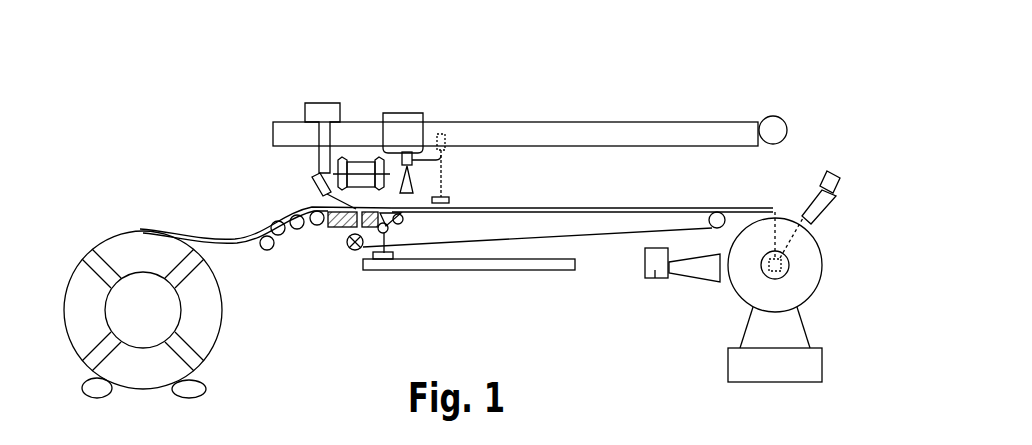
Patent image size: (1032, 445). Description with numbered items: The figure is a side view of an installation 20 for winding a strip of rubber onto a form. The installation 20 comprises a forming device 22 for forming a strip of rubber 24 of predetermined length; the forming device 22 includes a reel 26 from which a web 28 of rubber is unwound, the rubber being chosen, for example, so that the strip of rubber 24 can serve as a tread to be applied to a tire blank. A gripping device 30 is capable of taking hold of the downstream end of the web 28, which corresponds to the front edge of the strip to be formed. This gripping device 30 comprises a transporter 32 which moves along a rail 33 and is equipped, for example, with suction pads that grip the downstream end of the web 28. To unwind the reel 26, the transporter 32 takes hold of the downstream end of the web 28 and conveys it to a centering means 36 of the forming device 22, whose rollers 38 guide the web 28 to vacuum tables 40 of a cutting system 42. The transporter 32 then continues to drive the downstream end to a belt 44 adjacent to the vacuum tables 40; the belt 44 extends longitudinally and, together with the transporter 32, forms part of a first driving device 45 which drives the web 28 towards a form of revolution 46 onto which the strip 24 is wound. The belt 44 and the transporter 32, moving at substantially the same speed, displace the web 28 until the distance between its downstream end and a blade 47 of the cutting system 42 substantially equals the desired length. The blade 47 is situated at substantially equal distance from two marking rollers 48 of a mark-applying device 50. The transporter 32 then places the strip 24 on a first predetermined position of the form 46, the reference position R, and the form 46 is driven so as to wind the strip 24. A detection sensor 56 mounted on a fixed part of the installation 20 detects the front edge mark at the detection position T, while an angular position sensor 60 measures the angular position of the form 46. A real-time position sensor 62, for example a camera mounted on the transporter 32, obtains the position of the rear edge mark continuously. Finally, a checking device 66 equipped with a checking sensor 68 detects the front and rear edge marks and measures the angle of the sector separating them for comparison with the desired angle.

The installation 20 is at (178, 110).
The forming device 22 is at (284, 168).
The strip of rubber 24 is at (599, 206).
The reel 26 is at (77, 327).
The web 28 is at (154, 224).
The gripping device 30 is at (450, 191).
The transporter 32 is at (446, 151).
The rail 33 is at (650, 128).
The centering means 36 is at (243, 252).
The rollers 38 is at (303, 235).
The vacuum tables 40 is at (337, 233).
The cutting system 42 is at (315, 100).
The belt 44 is at (620, 233).
The first driving device 45 is at (400, 110).
The form of revolution 46 is at (813, 297).
The blade 47 is at (320, 205).
The marking rollers 48 is at (379, 156).
The mark-applying device 50 is at (359, 154).
The detection sensor 56 is at (841, 162).
The angular position sensor 60 is at (783, 264).
The real-time position sensor 62 is at (430, 152).
The checking device 66 is at (642, 291).
The checking sensor 68 is at (656, 279).
The detection position T is at (808, 222).
The reference position R is at (774, 207).